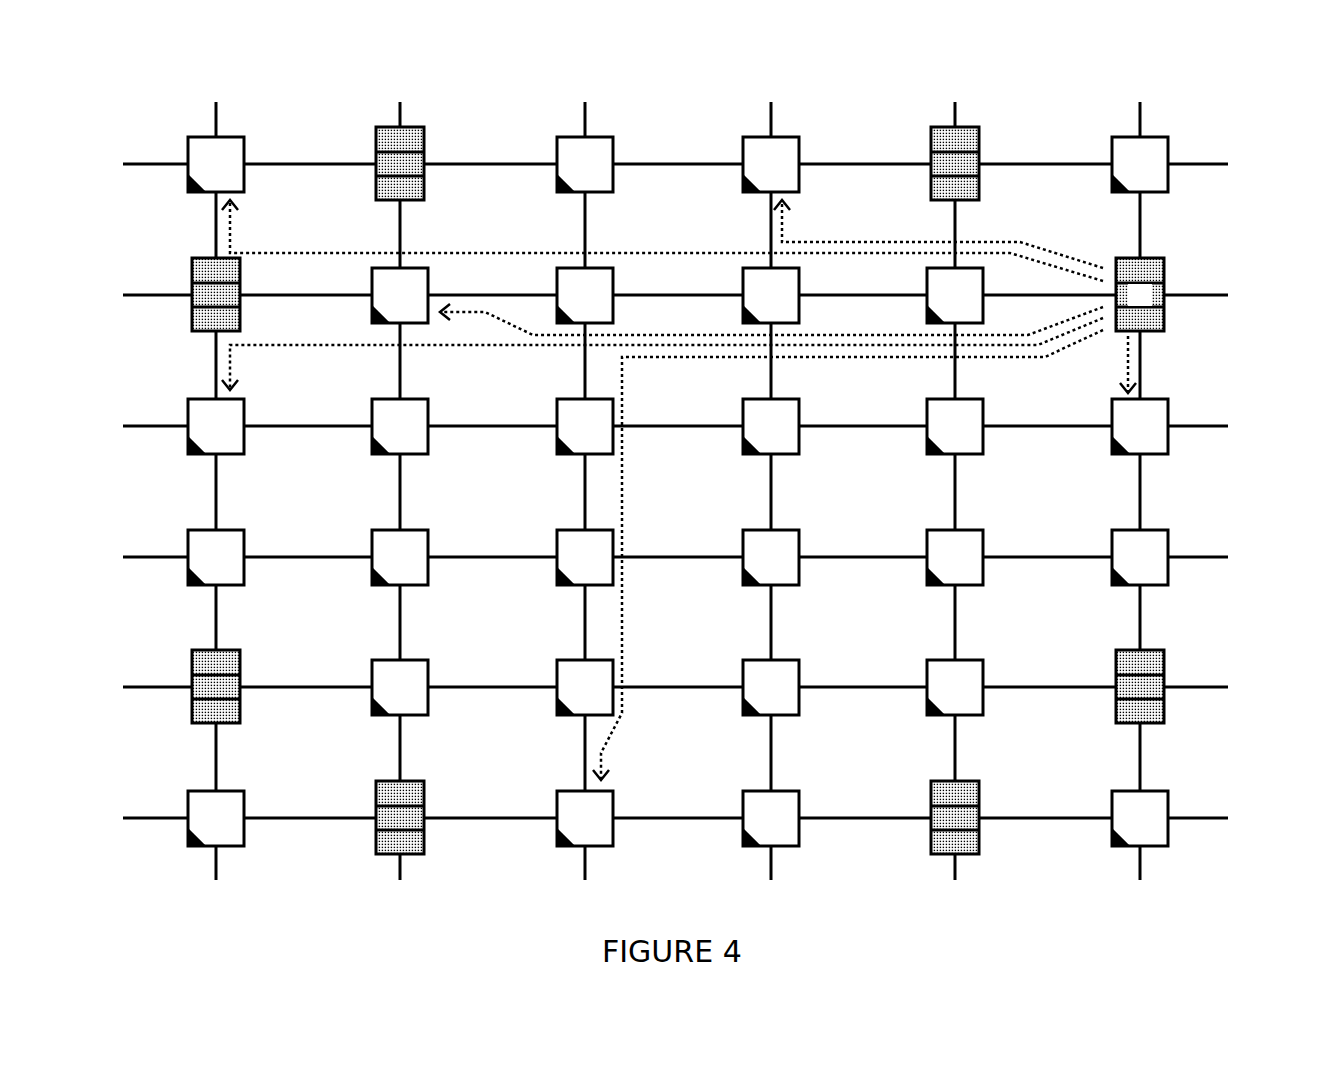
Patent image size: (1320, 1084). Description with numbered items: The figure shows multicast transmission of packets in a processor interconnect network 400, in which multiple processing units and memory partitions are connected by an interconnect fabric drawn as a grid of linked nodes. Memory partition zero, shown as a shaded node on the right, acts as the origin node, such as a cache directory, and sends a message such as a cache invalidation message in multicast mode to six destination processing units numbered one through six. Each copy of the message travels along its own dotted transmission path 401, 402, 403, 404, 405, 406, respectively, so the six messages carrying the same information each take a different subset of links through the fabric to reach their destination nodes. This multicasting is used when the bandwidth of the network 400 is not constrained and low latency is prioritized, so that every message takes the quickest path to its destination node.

The processor interconnect network 400 is at (1122, 68).
The transmission path 401 is at (620, 252).
The transmission path 402 is at (1020, 242).
The transmission path 403 is at (648, 335).
The transmission path 404 is at (453, 347).
The transmission path 405 is at (1122, 364).
The transmission path 406 is at (623, 607).